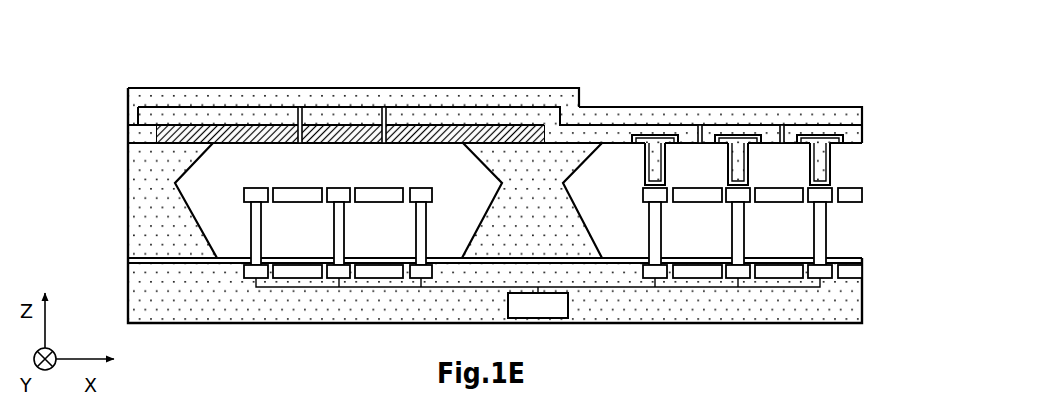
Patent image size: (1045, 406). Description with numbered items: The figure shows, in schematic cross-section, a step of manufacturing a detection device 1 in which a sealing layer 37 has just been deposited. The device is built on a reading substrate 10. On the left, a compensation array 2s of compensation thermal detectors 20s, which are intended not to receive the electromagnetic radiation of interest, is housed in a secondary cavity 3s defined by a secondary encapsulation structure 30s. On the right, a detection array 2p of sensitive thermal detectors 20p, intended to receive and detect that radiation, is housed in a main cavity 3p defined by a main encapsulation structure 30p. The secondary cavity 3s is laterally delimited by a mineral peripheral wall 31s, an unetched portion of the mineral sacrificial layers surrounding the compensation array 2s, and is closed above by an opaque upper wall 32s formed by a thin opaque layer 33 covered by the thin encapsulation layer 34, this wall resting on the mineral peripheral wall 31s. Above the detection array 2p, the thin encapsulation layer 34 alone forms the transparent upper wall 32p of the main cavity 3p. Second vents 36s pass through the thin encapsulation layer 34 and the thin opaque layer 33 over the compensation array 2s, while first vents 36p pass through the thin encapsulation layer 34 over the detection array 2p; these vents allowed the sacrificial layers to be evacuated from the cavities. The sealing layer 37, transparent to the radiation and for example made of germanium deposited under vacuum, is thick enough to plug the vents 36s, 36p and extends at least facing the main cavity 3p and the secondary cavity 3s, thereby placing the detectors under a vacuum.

The detection device 1 is at (78, 52).
The sealing layer 37 is at (124, 90).
The thin encapsulation layer 34 is at (125, 129).
The thin opaque layer 33 is at (154, 136).
The second vents 36s is at (299, 103).
The first vents 36p is at (699, 121).
The opaque upper wall 32s is at (394, 78).
The upper wall of main encapsulation structure 32p is at (784, 95).
The secondary encapsulation structure 30s is at (441, 64).
The main encapsulation structure 30p is at (833, 83).
The mineral peripheral wall 31s is at (189, 197).
The secondary cavity 3s is at (339, 211).
The main cavity 3p is at (612, 179).
The reading substrate 10 is at (866, 294).
The compensation thermal detectors 20s is at (297, 314).
The sensitive thermal detectors 20p is at (695, 314).
The compensation array 2s is at (340, 335).
The detection array 2p is at (747, 339).